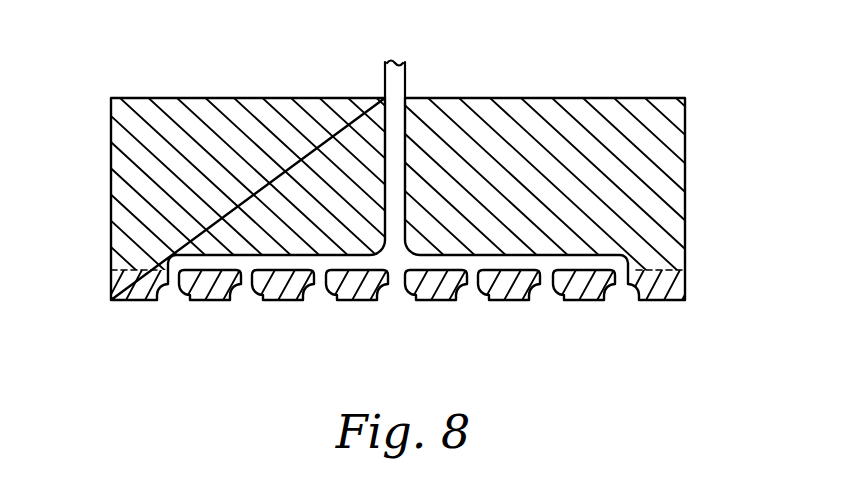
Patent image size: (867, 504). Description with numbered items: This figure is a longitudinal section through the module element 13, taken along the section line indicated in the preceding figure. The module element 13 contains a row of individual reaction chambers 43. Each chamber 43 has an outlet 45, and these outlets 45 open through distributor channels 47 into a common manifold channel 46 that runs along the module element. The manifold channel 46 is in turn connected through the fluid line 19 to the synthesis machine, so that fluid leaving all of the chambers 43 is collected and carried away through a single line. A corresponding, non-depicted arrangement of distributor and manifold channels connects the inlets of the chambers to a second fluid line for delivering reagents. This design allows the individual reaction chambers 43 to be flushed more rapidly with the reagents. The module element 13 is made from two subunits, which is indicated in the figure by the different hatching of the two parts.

The module element 13 is at (634, 70).
The fluid line 19 is at (395, 87).
The reaction chamber 43 is at (392, 302).
The outlet 45 is at (247, 286).
The manifold channel 46 is at (517, 262).
The distributor channel 47 is at (320, 266).